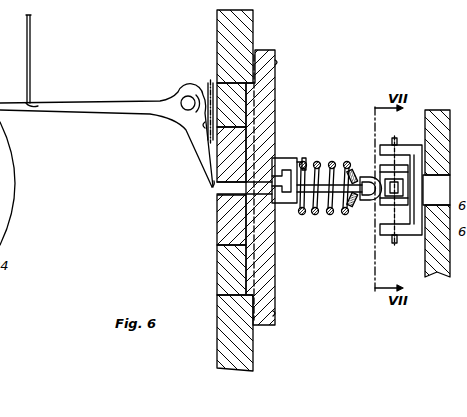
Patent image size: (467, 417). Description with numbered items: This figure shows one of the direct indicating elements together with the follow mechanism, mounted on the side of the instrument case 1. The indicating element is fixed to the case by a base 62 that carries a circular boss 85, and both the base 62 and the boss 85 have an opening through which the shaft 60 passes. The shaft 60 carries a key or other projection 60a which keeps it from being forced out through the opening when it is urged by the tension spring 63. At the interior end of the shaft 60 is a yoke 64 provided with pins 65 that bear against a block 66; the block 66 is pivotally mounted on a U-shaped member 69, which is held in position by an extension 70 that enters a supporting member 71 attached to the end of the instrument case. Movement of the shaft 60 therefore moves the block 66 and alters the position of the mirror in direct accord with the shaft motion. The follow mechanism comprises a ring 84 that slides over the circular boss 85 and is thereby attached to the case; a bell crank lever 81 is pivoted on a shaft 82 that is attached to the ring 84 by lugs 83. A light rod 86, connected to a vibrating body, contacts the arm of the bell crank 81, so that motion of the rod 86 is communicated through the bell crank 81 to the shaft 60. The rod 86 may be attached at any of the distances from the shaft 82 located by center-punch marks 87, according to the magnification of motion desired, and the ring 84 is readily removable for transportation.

The instrument case 1 is at (220, 307).
The shaft 60 is at (214, 195).
The key or other projection 60a is at (287, 164).
The base 62 is at (270, 120).
The tension spring 63 is at (316, 214).
The yoke 64 is at (357, 203).
The pins 65 is at (349, 171).
The block 66 is at (398, 205).
The U-shaped member 69 is at (412, 145).
The extension 70 is at (440, 190).
The supporting member 71 is at (445, 130).
The bell crank lever 81 is at (90, 112).
The shaft 82 is at (187, 91).
The lugs 83 is at (209, 85).
The ring 84 is at (217, 269).
The circular boss 85 is at (240, 245).
The light rod 86 is at (30, 48).
The center-punch marks 87 is at (40, 104).